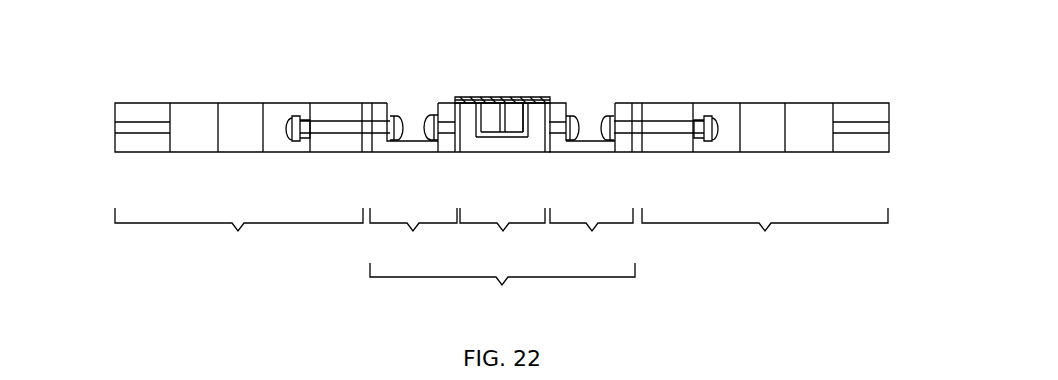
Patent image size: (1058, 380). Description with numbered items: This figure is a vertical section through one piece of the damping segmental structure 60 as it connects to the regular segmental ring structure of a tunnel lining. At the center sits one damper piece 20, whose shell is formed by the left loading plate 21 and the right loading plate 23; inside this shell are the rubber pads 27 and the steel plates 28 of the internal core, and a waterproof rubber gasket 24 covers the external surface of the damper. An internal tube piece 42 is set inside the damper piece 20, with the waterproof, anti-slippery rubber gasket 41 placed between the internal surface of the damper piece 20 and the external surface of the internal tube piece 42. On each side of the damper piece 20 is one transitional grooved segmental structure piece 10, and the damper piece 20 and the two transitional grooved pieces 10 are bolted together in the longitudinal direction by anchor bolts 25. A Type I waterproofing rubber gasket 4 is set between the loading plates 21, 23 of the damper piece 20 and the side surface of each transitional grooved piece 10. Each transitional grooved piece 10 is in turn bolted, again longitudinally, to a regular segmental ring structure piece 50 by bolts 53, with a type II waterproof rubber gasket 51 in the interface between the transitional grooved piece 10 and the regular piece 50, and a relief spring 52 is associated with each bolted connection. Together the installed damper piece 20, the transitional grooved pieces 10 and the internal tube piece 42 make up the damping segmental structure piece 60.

The Type I waterproofing rubber gasket 4 is at (458, 97).
The transitional grooved segmental structure piece 10 is at (501, 181).
The damper piece 20 is at (513, 139).
The left loading plate of the damper 21 is at (468, 152).
The right loading plate of the damper 23 is at (533, 152).
The waterproof rubber gasket covering the external surface of the damper 24 is at (502, 152).
The anchor bolts 25 is at (425, 141).
The rubber pads 27 is at (513, 103).
The steel plates 28 is at (500, 103).
The waterproof rubber gasket for internal tube 41 is at (467, 97).
The internal tube piece 42 is at (527, 103).
The regular segmental ring structure piece 50 is at (502, 181).
The type II waterproof rubber gasket 51 is at (365, 103).
The relief spring 52 is at (302, 103).
The bolts 53 is at (714, 103).
The damping segmental structure piece 60 is at (502, 288).